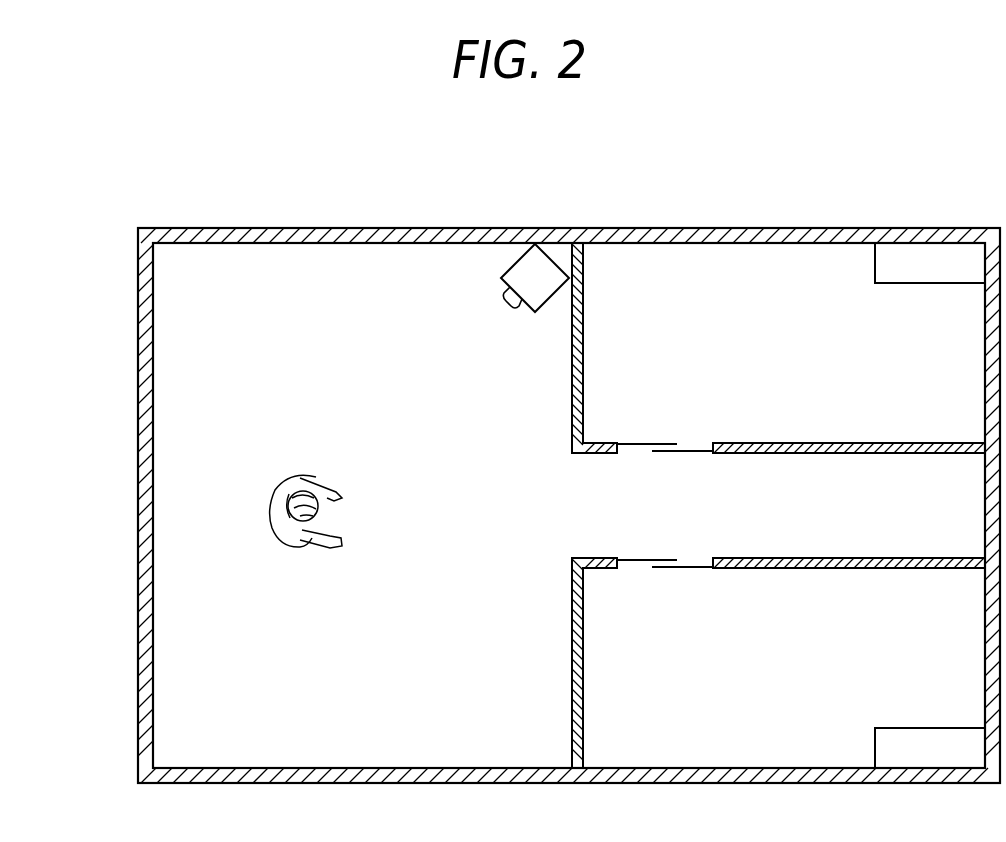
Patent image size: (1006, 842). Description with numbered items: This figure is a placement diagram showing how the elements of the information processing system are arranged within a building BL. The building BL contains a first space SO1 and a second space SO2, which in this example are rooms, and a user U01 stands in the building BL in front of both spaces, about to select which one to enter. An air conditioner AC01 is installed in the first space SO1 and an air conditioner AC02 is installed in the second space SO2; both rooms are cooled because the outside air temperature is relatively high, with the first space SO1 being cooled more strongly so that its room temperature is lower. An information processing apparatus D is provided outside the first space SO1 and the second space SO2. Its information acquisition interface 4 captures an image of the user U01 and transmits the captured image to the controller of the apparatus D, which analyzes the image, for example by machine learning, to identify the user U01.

The building BL is at (742, 228).
The information processing apparatus D is at (508, 271).
The information acquisition interface 4 is at (510, 307).
The user U01 is at (272, 495).
The first space SO1 is at (784, 356).
The second space SO2 is at (790, 680).
The air conditioner AC01 is at (929, 263).
The air conditioner AC02 is at (930, 750).